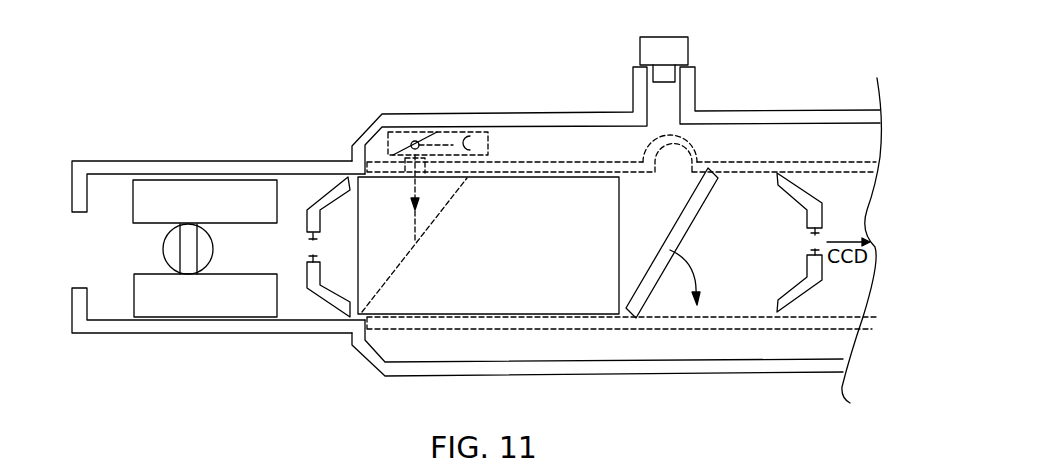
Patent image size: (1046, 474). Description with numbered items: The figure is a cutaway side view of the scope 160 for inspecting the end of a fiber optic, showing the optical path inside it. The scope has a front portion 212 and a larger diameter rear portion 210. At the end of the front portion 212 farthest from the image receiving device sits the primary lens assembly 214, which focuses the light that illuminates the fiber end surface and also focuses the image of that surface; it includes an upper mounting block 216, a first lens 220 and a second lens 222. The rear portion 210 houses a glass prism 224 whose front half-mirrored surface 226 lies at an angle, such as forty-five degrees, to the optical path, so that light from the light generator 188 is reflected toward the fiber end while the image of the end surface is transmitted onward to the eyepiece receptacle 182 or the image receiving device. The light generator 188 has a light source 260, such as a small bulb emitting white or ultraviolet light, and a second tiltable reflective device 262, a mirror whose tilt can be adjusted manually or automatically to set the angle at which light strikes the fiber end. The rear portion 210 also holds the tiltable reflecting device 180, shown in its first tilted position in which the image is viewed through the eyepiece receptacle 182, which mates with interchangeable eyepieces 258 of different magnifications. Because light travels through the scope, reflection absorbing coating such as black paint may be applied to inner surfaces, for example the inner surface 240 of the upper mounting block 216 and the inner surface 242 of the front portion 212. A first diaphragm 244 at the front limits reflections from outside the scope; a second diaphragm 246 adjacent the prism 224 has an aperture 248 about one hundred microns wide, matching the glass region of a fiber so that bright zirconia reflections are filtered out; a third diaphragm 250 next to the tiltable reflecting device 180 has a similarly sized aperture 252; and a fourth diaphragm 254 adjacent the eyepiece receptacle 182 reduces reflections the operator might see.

The scope 160 is at (496, 64).
The tiltable reflecting device 180 is at (683, 229).
The eyepiece receptacle 182 is at (688, 97).
The light generator 188 is at (443, 132).
The rear portion 210 is at (467, 370).
The front portion 212 is at (212, 331).
The primary lens assembly 214 is at (221, 308).
The upper mounting block 216 is at (221, 214).
The first lens 220 is at (170, 247).
The second lens 222 is at (208, 252).
The prism 224 is at (520, 292).
The front half-mirrored surface 226 is at (410, 256).
The inner surface of the upper mounting block 240 is at (143, 229).
The inner surface of the front portion 242 is at (122, 175).
The first diaphragm 244 is at (77, 190).
The second diaphragm 246 is at (328, 197).
The aperture 248 is at (312, 248).
The third diaphragm 250 is at (805, 200).
The aperture 252 is at (813, 241).
The fourth diaphragm 254 is at (645, 150).
The eyepiece 258 is at (690, 50).
The light source 260 is at (470, 137).
The second tiltable reflective device 262 is at (402, 142).